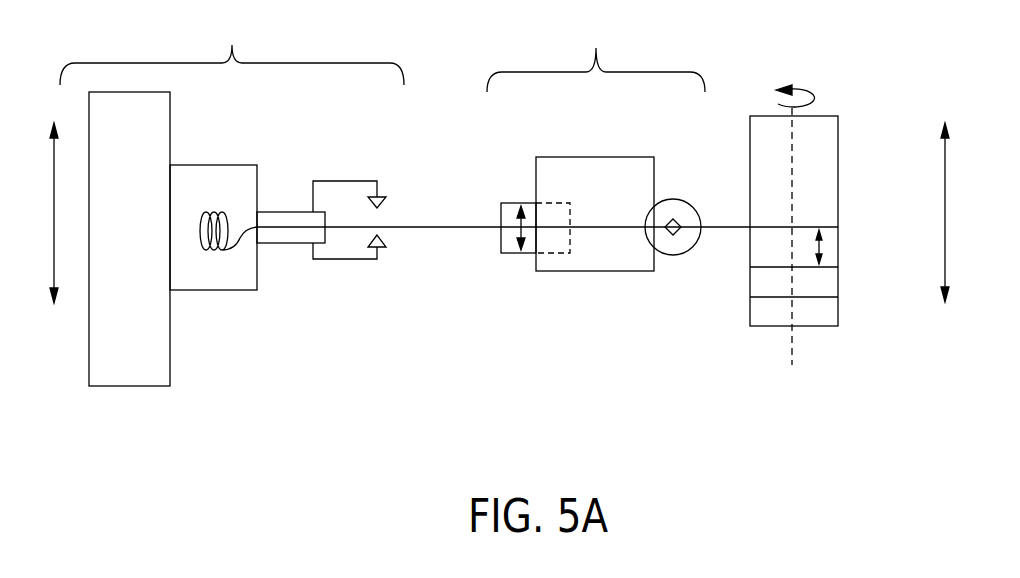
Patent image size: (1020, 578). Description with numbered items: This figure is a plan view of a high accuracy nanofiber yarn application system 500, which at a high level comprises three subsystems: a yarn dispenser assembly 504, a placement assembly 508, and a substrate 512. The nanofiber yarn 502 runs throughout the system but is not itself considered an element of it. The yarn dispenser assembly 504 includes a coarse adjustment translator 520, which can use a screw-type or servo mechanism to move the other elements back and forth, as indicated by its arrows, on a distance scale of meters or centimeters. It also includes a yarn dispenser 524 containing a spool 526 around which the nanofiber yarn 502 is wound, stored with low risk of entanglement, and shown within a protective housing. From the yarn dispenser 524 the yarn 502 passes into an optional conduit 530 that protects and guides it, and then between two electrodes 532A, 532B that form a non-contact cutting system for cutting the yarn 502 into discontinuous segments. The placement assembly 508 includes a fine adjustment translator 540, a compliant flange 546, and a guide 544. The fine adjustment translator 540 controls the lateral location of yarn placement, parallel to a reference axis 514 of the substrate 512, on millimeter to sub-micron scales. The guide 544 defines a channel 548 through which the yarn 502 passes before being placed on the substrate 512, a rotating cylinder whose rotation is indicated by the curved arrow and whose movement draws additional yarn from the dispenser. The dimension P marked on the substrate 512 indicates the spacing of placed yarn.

The nanofiber yarn application system 500 is at (470, 371).
The nanofiber yarn 502 is at (433, 226).
The yarn dispenser assembly 504 is at (232, 48).
The placement assembly 508 is at (596, 52).
The substrate 512 is at (839, 123).
The reference axis 514 is at (798, 350).
The coarse adjustment translator 520 is at (142, 387).
The yarn dispenser 524 is at (222, 164).
The spool 526 is at (217, 268).
The conduit 530 is at (277, 211).
The electrode 532A is at (347, 180).
The electrode 532B is at (347, 260).
The fine adjustment translator 540 is at (513, 255).
The guide 544 is at (680, 255).
The compliant flange 546 is at (585, 273).
The channel 548 is at (691, 210).
The pitch / displacement P is at (823, 248).